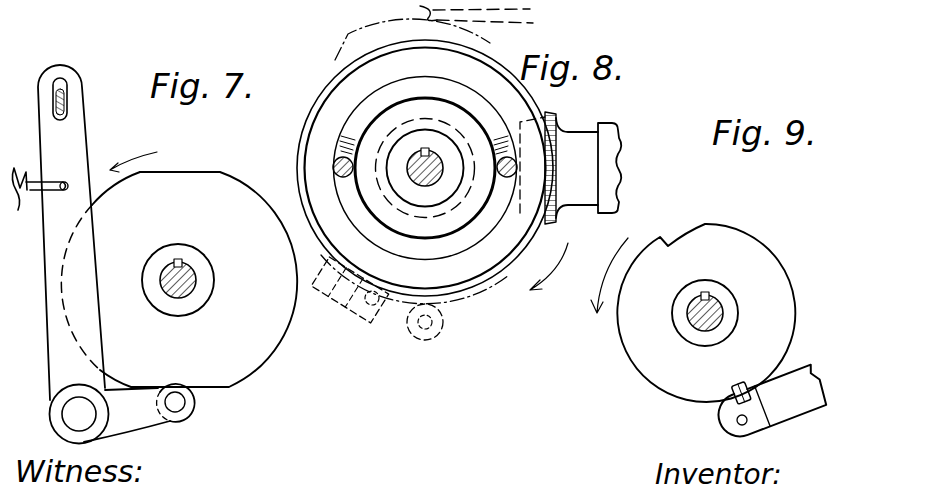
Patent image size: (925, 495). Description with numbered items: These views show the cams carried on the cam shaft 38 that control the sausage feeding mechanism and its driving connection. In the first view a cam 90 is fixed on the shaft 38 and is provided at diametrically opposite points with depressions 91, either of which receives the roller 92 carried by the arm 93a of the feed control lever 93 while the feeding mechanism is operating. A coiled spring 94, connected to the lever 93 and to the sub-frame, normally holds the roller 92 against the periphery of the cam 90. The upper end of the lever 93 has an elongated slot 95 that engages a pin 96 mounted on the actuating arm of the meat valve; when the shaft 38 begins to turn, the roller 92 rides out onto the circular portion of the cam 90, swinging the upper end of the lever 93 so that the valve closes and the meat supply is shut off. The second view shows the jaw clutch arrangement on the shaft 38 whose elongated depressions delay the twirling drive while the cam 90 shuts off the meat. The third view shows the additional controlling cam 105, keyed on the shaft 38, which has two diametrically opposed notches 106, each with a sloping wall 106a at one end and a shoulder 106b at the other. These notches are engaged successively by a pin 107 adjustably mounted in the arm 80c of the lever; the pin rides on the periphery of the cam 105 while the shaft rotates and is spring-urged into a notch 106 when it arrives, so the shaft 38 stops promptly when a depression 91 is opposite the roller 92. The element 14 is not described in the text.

In FIG. 8, the frame member 14 is at (389, 16).
In FIG. 7, the shaft 38 is at (190, 285).
In FIG. 8, the shaft 38 is at (430, 185).
In FIG. 9, the shaft 38 is at (723, 310).
In FIG. 9, the arm of lever 80 80c is at (793, 410).
In FIG. 7, the cam 90 is at (268, 300).
In FIG. 7, the depressions 91 is at (183, 172).
In FIG. 7, the roller 92 is at (185, 420).
In FIG. 7, the feed control lever 93 is at (67, 356).
In FIG. 7, the arm 93a is at (133, 425).
In FIG. 7, the coiled spring 94 is at (17, 210).
In FIG. 7, the elongated slot 95 is at (65, 84).
In FIG. 7, the pin 96 is at (65, 100).
In FIG. 9, the controlling cam 105 is at (638, 340).
In FIG. 9, the notches 106 is at (740, 395).
In FIG. 9, the sloping wall 106a is at (733, 390).
In FIG. 9, the shoulder 106b is at (752, 387).
In FIG. 9, the pin 107 is at (743, 402).